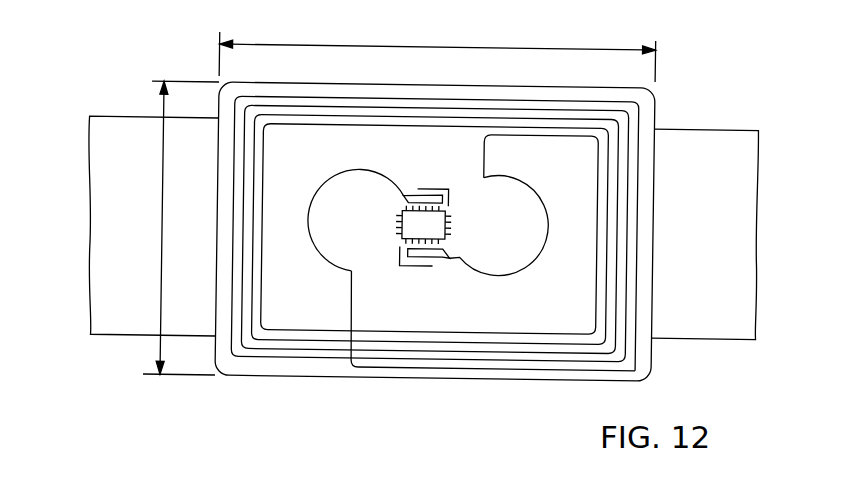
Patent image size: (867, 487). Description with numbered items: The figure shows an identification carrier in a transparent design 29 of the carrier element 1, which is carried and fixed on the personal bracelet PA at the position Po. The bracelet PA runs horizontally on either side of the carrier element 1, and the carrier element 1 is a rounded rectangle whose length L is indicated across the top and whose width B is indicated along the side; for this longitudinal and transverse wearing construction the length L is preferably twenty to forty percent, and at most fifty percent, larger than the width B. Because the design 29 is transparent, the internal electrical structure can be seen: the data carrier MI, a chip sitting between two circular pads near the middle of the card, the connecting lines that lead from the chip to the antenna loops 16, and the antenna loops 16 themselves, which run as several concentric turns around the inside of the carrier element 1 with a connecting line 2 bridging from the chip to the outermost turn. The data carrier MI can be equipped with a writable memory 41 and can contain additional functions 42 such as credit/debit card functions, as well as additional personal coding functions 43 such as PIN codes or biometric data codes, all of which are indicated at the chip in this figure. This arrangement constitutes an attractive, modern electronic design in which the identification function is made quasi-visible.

The carrier element 1 is at (440, 376).
The antenna coil 2 is at (390, 367).
The antenna loops 16 is at (336, 356).
The transparent design 29 is at (288, 312).
The writable memory 41 is at (392, 223).
The additional functions 42 is at (392, 223).
The additional personal coding functions 43 is at (392, 223).
The data carrier MI is at (484, 220).
The personal bracelet PA is at (108, 288).
The position Po is at (660, 84).
The length L is at (437, 47).
The width B is at (181, 228).